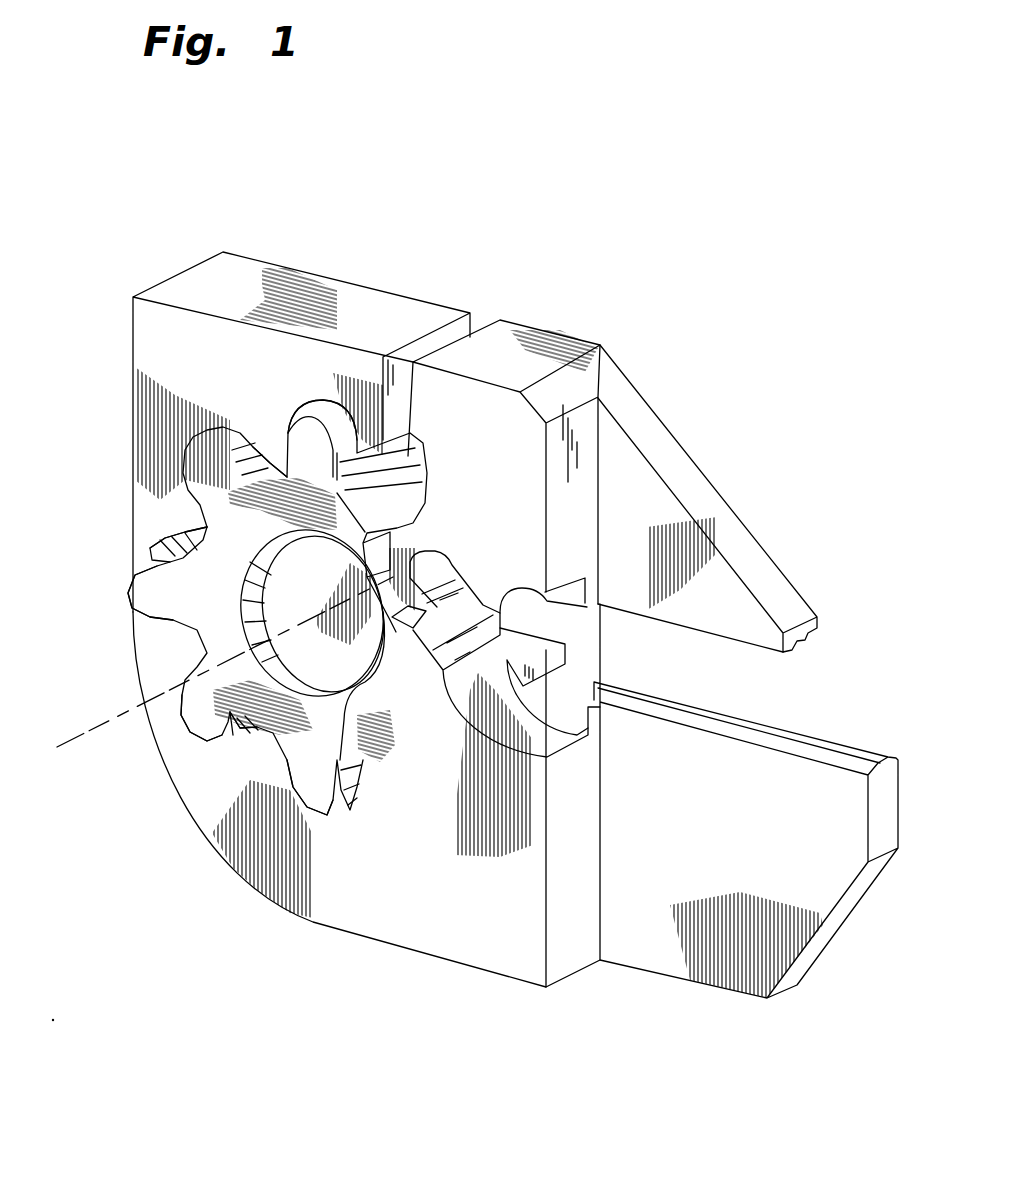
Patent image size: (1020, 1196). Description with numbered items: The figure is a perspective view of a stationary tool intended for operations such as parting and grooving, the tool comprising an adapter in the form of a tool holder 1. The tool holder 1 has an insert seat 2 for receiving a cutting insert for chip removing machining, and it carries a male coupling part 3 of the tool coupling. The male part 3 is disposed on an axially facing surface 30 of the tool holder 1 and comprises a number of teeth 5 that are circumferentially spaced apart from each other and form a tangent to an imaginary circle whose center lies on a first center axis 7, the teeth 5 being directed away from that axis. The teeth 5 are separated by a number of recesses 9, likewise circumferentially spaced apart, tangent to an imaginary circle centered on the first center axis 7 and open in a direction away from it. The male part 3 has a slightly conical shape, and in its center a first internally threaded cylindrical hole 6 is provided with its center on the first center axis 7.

The tool holder 1 is at (667, 361).
The insert seat 2 is at (707, 672).
The male coupling part 3 is at (352, 820).
The teeth 5 is at (308, 433).
The first internally threaded cylindrical hole 6 is at (372, 758).
The first center axis 7 is at (92, 727).
The recesses 9 is at (272, 476).
The axially facing surface 30 is at (174, 636).